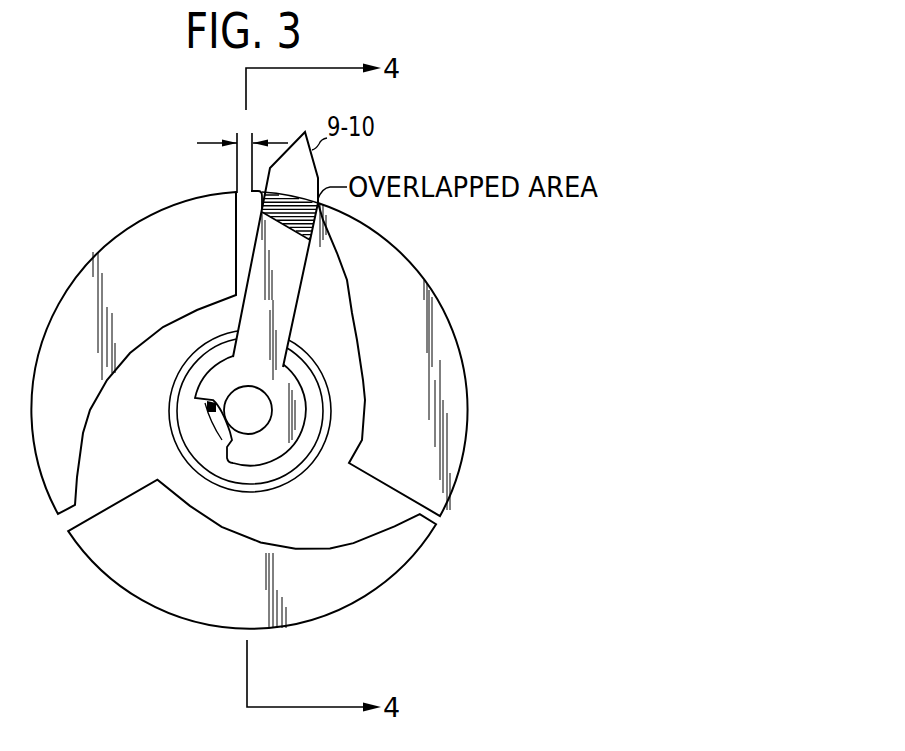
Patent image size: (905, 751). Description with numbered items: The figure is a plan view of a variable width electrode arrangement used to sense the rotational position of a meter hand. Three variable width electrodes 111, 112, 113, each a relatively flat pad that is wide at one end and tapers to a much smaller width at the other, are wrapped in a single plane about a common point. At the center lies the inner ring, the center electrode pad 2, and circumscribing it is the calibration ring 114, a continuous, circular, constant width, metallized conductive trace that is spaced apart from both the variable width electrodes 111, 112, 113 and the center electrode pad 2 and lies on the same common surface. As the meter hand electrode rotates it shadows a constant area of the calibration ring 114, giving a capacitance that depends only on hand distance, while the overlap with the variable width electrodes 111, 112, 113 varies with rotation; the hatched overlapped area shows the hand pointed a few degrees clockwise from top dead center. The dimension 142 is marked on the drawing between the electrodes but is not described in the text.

The center electrode pad 2 is at (263, 374).
The variable width electrode 111 is at (195, 272).
The variable width electrode 112 is at (158, 551).
The variable width electrode 113 is at (404, 315).
The calibration ring 114 is at (170, 408).
The slot gap width 142 is at (239, 138).